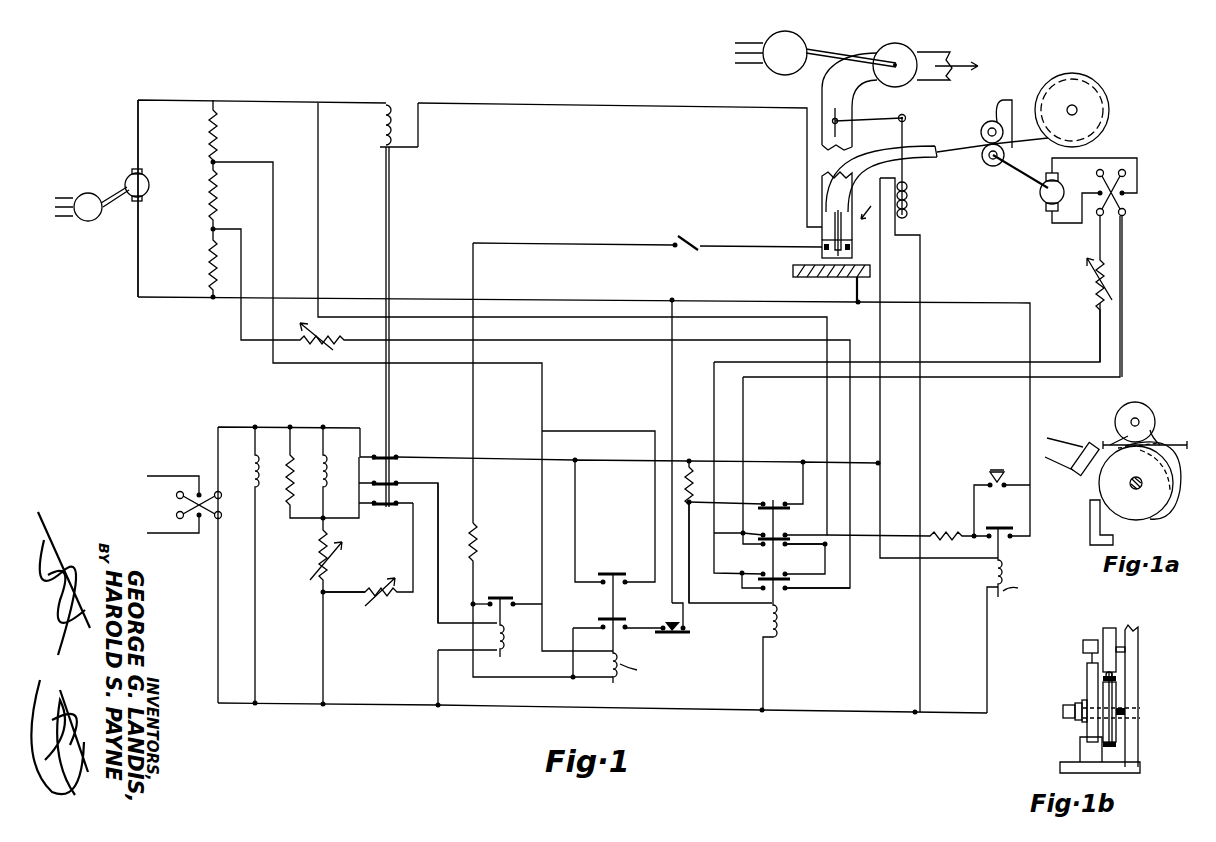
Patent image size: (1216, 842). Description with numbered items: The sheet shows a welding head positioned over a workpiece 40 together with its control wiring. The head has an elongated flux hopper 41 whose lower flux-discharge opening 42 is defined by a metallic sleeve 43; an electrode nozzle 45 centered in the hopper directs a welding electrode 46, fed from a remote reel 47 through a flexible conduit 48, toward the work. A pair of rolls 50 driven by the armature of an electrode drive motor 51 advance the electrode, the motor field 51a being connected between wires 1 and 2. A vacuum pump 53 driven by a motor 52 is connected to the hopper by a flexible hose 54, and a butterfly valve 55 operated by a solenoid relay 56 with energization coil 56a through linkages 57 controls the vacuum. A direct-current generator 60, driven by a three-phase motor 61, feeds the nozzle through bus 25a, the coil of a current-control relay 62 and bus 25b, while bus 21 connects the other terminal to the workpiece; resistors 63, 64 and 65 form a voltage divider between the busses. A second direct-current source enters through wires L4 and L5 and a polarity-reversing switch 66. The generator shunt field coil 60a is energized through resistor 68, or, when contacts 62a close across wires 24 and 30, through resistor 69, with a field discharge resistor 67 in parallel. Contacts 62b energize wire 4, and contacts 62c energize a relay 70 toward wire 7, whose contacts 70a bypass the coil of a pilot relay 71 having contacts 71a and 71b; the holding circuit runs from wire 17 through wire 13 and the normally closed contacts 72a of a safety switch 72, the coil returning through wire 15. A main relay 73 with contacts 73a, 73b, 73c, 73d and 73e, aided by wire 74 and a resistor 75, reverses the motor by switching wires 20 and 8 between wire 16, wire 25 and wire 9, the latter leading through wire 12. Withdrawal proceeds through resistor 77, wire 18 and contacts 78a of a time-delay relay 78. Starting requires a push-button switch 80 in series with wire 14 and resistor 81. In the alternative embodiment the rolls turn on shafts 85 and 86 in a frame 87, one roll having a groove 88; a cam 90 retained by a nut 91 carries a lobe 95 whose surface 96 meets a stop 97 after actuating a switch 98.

In FIG. 1, the wire 1 is at (280, 427).
In FIG. 1, the wire 2 is at (300, 705).
In FIG. 1, the wire 4 is at (496, 460).
In FIG. 1, the wire 7 is at (438, 618).
In FIG. 1, the wire 8 is at (714, 407).
In FIG. 1, the wire 9 is at (787, 590).
In FIG. 1, the wire 12 is at (280, 191).
In FIG. 1, the wire 13 is at (652, 632).
In FIG. 1, the wire 14 is at (476, 488).
In FIG. 1, the wire 15 is at (545, 399).
In FIG. 1, the wire 16 is at (818, 532).
In FIG. 1, the wire 17 is at (476, 578).
In FIG. 1, the wire 18 is at (977, 528).
In FIG. 1A, the wire 18 is at (1080, 438).
In FIG. 1, the wire 20 is at (746, 413).
In FIG. 1, the bus 21 is at (172, 298).
In FIG. 1, the wire 24 is at (352, 596).
In FIG. 1, the wire 25 is at (820, 546).
In FIG. 1, the bus 25a is at (232, 100).
In FIG. 1, the bus 25b is at (490, 102).
In FIG. 1, the wire 30 is at (350, 519).
In FIG. 1, the workpiece 40 is at (812, 278).
In FIG. 1, the flux hopper 41 is at (822, 189).
In FIG. 1, the flux-discharge opening 42 is at (851, 248).
In FIG. 1, the metallic ring or sleeve 43 is at (822, 253).
In FIG. 1, the electrode nozzle 45 is at (833, 226).
In FIG. 1, the welding electrode 46 is at (843, 240).
In FIG. 1A, the welding electrode 46 is at (1176, 444).
In FIG. 1B, the welding electrode 46 is at (1118, 676).
In FIG. 1, the reel 47 is at (1080, 92).
In FIG. 1, the flexible conduit 48 is at (878, 168).
In FIG. 1, the rolls 50 is at (990, 121).
In FIG. 1B, the rolls 50 is at (1109, 627).
In FIG. 1, the electrode drive motor 51 is at (1058, 180).
In FIG. 1, the field of the electrode drive motor 51a is at (268, 520).
In FIG. 1, the motor 52 is at (806, 49).
In FIG. 1, the vacuum pump 53 is at (912, 52).
In FIG. 1, the flexible hose 54 is at (868, 101).
In FIG. 1, the butterfly valve 55 is at (823, 91).
In FIG. 1, the solenoid relay 56 is at (910, 183).
In FIG. 1, the energization coil 56a is at (910, 201).
In FIG. 1, the linkages 57 is at (906, 136).
In FIG. 1, the direct-current generator 60 is at (150, 178).
In FIG. 1, the generator shunt field coil 60a is at (330, 455).
In FIG. 1, the three-phase alternating-current motor 61 is at (113, 184).
In FIG. 1, the current-control relay 62 is at (395, 106).
In FIG. 1, the normally open contacts 62a is at (374, 510).
In FIG. 1, the normally open contacts 62b is at (400, 457).
In FIG. 1, the normally open contacts 62c is at (400, 483).
In FIG. 1, the resistor 63 is at (220, 138).
In FIG. 1, the resistor 64 is at (220, 190).
In FIG. 1, the resistor 65 is at (210, 262).
In FIG. 1, the polarity-reversing switch 66 is at (178, 506).
In FIG. 1, the field discharge resistor 67 is at (283, 513).
In FIG. 1, the resistor 68 is at (338, 572).
In FIG. 1, the resistor 69 is at (378, 585).
In FIG. 1, the relay 70 is at (503, 641).
In FIG. 1, the normally open contacts 70a is at (512, 597).
In FIG. 1, the pilot relay 71 is at (616, 680).
In FIG. 1, the normally open contacts 71a is at (614, 572).
In FIG. 1, the normally open contacts 71b is at (616, 616).
In FIG. 1, the safety switch 72 is at (668, 622).
In FIG. 1, the normally closed contacts 72a is at (675, 637).
In FIG. 1, the main relay 73 is at (778, 624).
In FIG. 1, the normally closed contacts 73a is at (764, 502).
In FIG. 1, the normally closed contacts 73b is at (784, 534).
In FIG. 1, the normally open contacts 73c is at (761, 546).
In FIG. 1, the normally closed contacts 73d is at (784, 546).
In FIG. 1, the normally open contacts 73e is at (761, 590).
In FIG. 1, the wire 74 is at (691, 537).
In FIG. 1, the resistor 75 is at (345, 340).
In FIG. 1, the resistor 77 is at (954, 533).
In FIG. 1, the time-delay relay 78 is at (994, 575).
In FIG. 1, the normally open contacts 78a is at (1006, 540).
In FIG. 1, the push-button switch 80 is at (688, 243).
In FIG. 1, the resistor 81 is at (480, 544).
In FIG. 1B, the shaft 85 is at (1125, 712).
In FIG. 1B, the shaft 86 is at (1125, 649).
In FIG. 1B, the frame or base 87 is at (1136, 628).
In FIG. 1B, the groove 88 is at (1115, 774).
In FIG. 1A, the cam member 90 is at (1148, 510).
In FIG. 1B, the cam member 90 is at (1087, 686).
In FIG. 1B, the nut 91 is at (1076, 708).
In FIG. 1A, the lobe 95 is at (1160, 436).
In FIG. 1A, the surface 96 is at (1118, 440).
In FIG. 1A, the stop 97 is at (1090, 514).
In FIG. 1A, the switch 98 is at (1090, 475).
In FIG. 1B, the switch 98 is at (1083, 646).
In FIG. 1, the wire L4 is at (150, 476).
In FIG. 1, the wire L5 is at (150, 534).